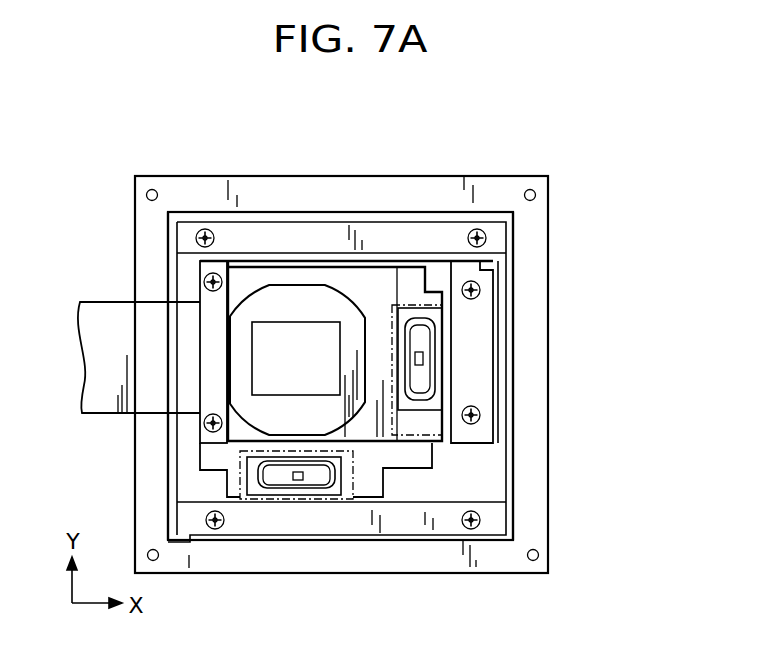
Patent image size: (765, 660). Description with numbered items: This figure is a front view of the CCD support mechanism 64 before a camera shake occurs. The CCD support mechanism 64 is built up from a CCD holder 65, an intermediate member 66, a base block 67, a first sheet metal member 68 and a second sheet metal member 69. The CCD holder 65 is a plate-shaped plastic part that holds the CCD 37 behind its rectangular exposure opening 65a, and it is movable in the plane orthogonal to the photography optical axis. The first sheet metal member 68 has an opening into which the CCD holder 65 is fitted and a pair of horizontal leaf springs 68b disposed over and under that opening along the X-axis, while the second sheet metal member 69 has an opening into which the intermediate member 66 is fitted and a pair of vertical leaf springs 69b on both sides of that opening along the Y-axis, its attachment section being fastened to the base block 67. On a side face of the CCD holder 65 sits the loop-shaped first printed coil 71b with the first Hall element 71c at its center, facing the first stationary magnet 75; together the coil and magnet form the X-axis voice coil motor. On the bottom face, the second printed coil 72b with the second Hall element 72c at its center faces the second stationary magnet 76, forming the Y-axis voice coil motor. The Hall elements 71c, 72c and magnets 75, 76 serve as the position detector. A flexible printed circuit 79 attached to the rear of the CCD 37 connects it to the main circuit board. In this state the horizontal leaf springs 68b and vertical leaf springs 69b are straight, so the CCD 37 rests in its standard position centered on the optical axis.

The CCD support mechanism 64 is at (541, 159).
The CCD holder 65 is at (302, 271).
The exposure opening 65a is at (281, 323).
The CCD 37 is at (282, 377).
The first sheet metal member 68 is at (496, 285).
The horizontal leaf springs 68b is at (381, 260).
The second sheet metal member 69 is at (418, 527).
The vertical leaf springs 69b is at (168, 277).
The intermediate member 66 is at (506, 415).
The base block 67 is at (549, 555).
The flexible printed circuit 79 is at (103, 415).
The first printed coil 71b is at (434, 333).
The first Hall element 71c is at (424, 358).
The first stationary magnet 75 is at (452, 380).
The second printed coil 72b is at (260, 493).
The second Hall element 72c is at (298, 484).
The second stationary magnet 76 is at (343, 502).